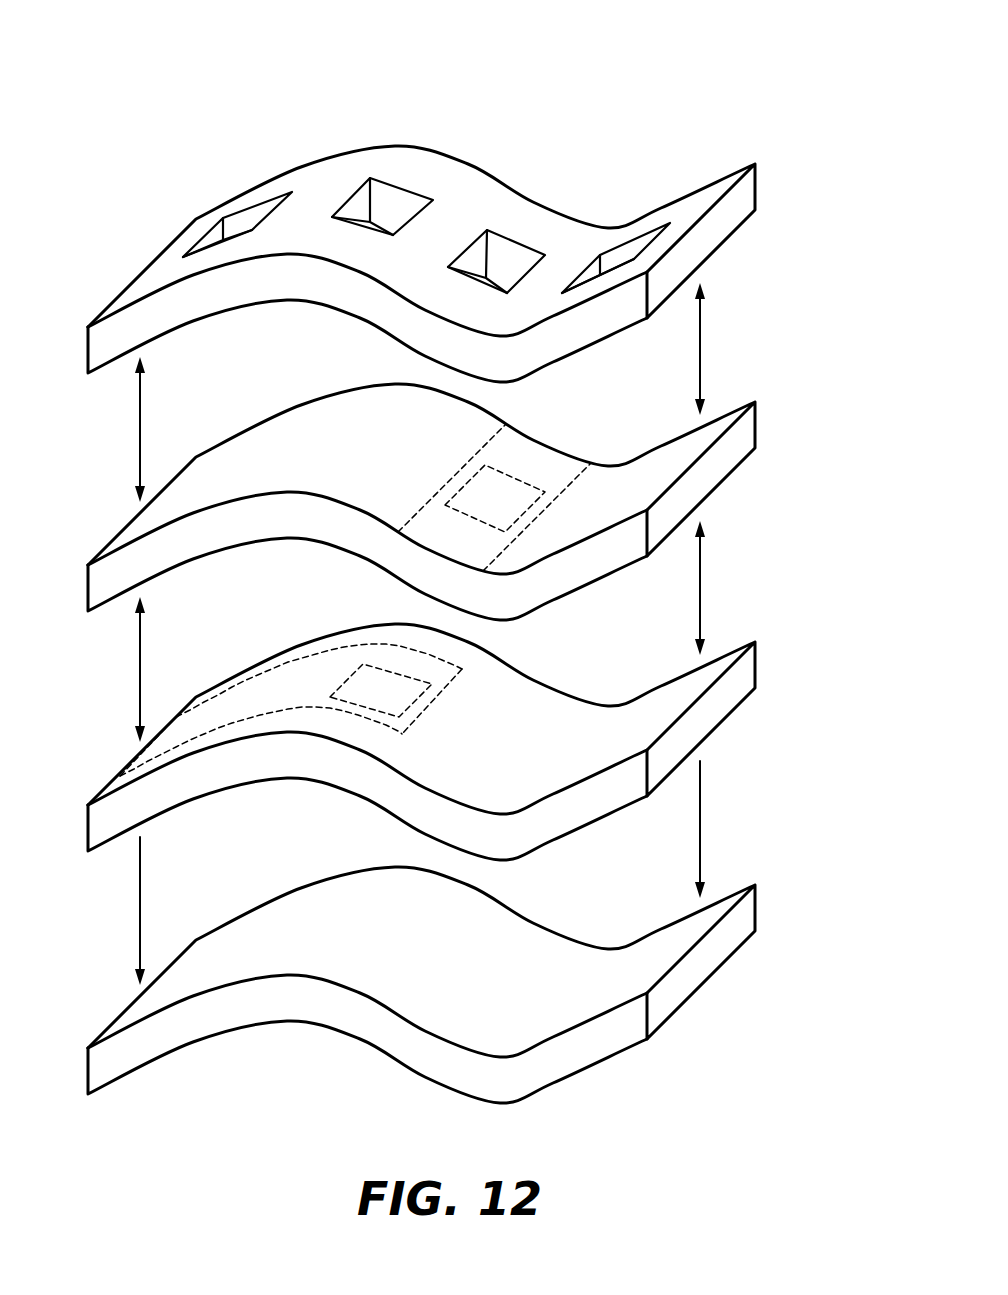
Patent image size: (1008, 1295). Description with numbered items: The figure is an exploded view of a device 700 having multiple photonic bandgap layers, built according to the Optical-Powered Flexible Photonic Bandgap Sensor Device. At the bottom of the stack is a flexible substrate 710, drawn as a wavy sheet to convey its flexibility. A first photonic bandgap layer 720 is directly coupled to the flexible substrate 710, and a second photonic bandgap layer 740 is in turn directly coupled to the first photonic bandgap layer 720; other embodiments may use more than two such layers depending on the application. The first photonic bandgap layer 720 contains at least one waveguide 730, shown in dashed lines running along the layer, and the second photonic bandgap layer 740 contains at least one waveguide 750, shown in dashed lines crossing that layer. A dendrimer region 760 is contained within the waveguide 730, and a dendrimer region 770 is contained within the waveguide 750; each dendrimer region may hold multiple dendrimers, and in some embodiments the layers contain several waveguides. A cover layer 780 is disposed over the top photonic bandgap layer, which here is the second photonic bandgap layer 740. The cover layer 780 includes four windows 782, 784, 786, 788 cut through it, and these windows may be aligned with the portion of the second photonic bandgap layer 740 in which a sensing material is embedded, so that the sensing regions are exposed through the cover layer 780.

The device 700 is at (124, 108).
The flexible substrate 710 is at (722, 934).
The first photonic bandgap layer 720 is at (722, 691).
The waveguide 730 is at (227, 713).
The second photonic bandgap layer 740 is at (722, 451).
The waveguide 750 is at (563, 477).
The dendrimer region 760 is at (368, 683).
The dendrimer region 770 is at (500, 497).
The cover layer 780 is at (722, 213).
The window 782 is at (240, 225).
The window 784 is at (396, 200).
The window 786 is at (505, 260).
The window 788 is at (616, 262).